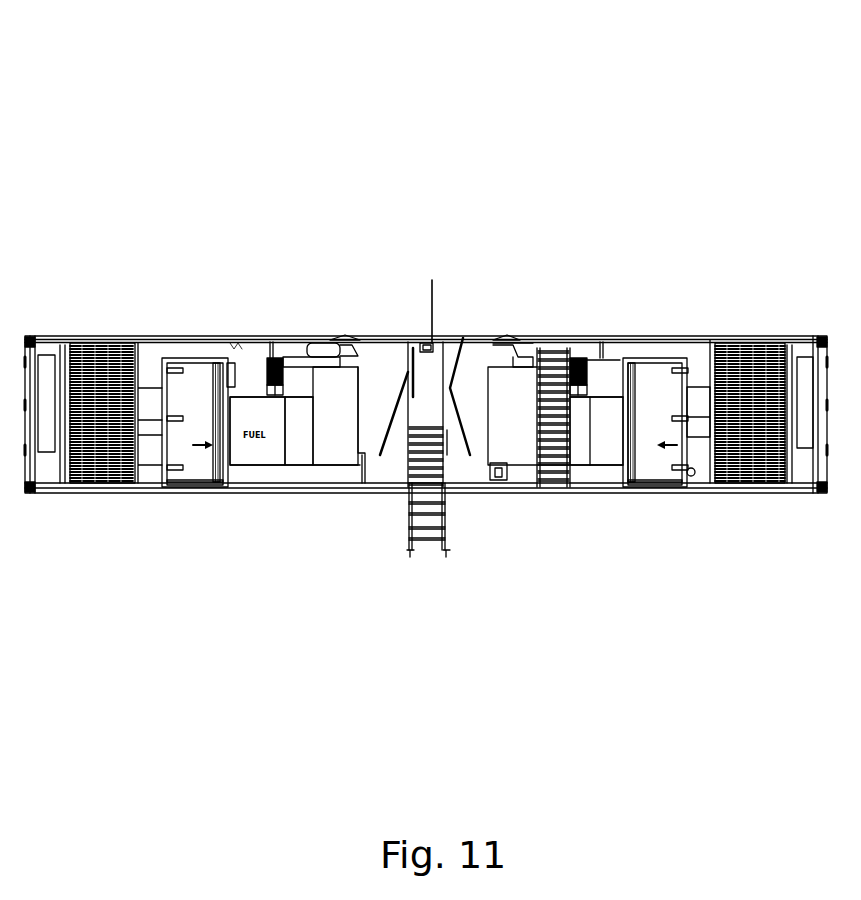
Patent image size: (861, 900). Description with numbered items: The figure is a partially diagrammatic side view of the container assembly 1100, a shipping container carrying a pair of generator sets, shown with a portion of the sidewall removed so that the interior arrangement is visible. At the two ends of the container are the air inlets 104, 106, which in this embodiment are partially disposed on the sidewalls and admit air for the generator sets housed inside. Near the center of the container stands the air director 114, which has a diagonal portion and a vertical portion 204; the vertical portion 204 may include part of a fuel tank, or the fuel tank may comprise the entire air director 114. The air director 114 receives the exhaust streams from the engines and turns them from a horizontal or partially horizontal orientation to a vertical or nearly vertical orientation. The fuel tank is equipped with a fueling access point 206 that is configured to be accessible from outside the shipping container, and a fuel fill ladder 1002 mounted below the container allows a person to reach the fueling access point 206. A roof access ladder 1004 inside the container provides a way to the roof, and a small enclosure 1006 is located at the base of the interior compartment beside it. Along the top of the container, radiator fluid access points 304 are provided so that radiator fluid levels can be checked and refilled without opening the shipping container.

The mobile power system in container 1100 is at (155, 70).
The air inlet 104 is at (108, 467).
The air inlet 106 is at (758, 467).
The radiator fluid access point 304 is at (353, 336).
The fueling access point 206 is at (422, 338).
The vertical portion 204 is at (435, 280).
The air director 114 is at (463, 338).
The fuel fill ladder 1002 is at (409, 535).
The roof access ladder 1004 is at (552, 467).
The control box 1006 is at (493, 481).